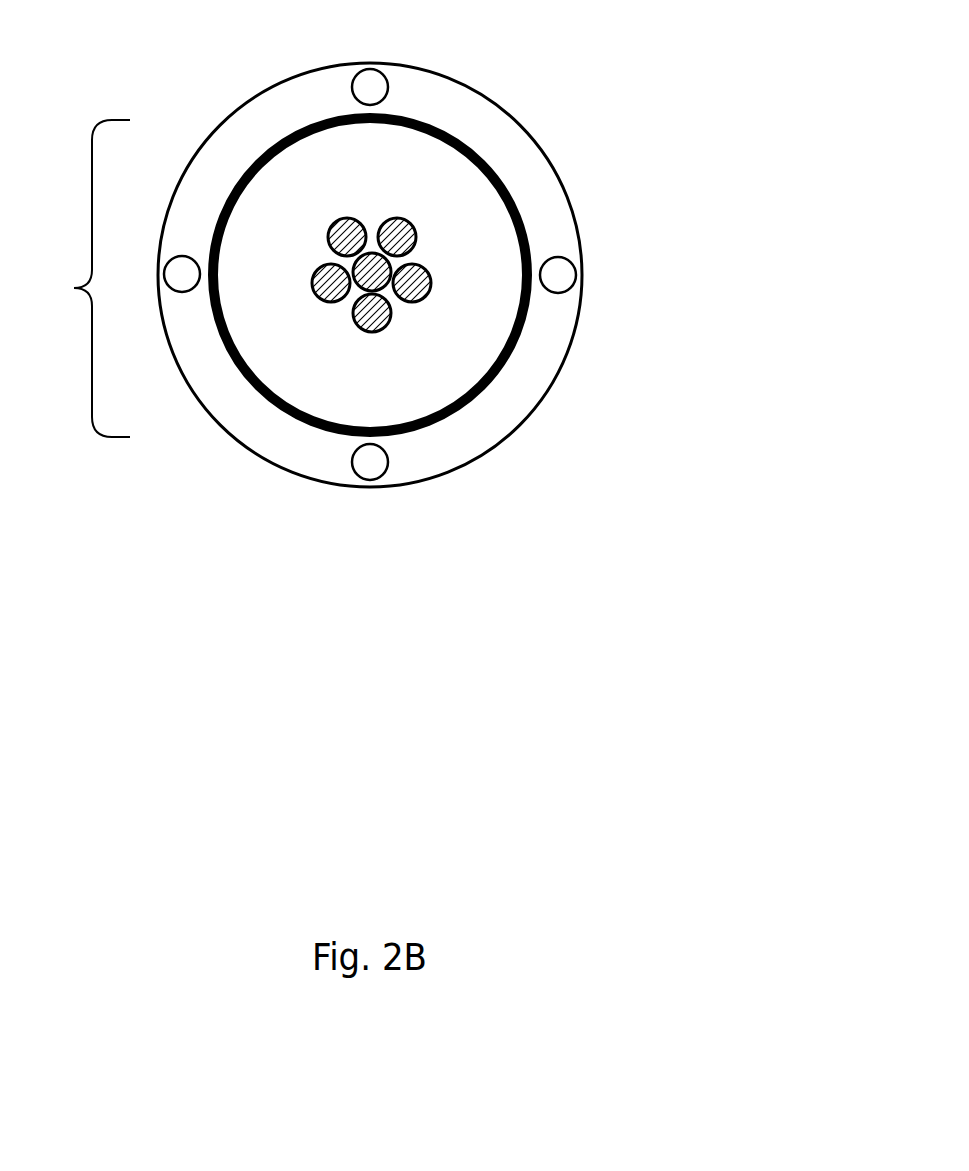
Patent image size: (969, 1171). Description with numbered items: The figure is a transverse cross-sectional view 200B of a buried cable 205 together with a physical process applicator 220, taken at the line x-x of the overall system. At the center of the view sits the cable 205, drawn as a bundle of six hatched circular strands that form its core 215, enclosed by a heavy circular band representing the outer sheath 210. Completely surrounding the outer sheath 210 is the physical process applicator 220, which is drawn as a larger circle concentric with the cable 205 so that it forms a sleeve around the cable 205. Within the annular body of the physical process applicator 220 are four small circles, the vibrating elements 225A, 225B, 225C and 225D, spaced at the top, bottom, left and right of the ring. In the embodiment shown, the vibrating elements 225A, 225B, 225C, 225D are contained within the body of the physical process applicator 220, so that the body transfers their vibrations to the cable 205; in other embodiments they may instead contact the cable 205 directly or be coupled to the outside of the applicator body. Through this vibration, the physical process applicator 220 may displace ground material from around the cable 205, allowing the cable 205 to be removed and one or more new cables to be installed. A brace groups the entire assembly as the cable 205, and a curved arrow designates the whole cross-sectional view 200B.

The transverse cross-sectional view 200B is at (703, 710).
The cable 205 is at (73, 289).
The outer sheath 210 is at (508, 183).
The core 215 is at (427, 253).
The physical process applicator 220 is at (515, 117).
The vibrating element 225A is at (390, 83).
The vibrating element 225B is at (388, 462).
The vibrating element 225C is at (163, 273).
The vibrating element 225D is at (578, 275).